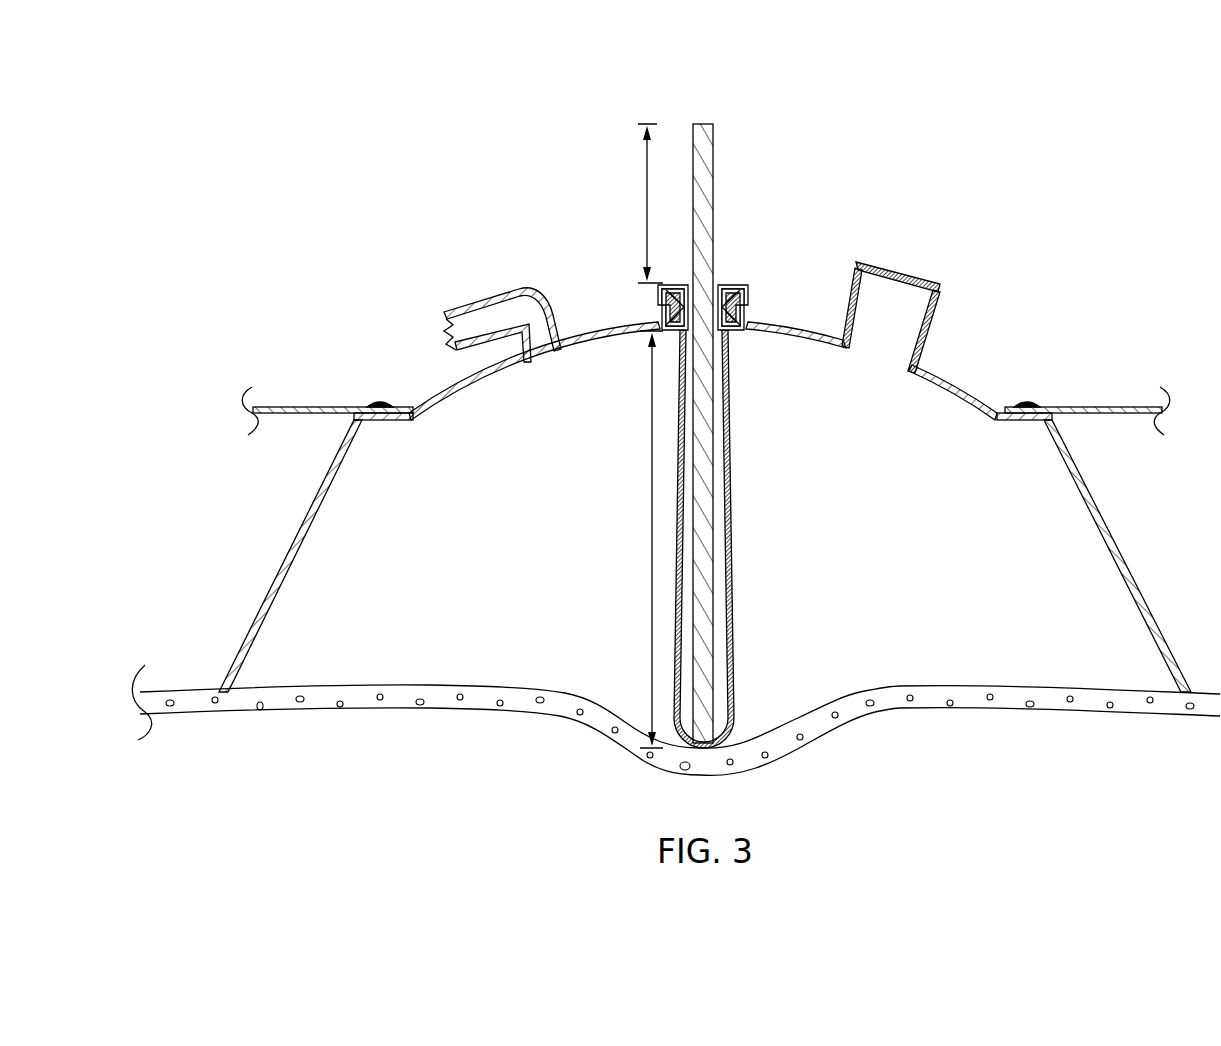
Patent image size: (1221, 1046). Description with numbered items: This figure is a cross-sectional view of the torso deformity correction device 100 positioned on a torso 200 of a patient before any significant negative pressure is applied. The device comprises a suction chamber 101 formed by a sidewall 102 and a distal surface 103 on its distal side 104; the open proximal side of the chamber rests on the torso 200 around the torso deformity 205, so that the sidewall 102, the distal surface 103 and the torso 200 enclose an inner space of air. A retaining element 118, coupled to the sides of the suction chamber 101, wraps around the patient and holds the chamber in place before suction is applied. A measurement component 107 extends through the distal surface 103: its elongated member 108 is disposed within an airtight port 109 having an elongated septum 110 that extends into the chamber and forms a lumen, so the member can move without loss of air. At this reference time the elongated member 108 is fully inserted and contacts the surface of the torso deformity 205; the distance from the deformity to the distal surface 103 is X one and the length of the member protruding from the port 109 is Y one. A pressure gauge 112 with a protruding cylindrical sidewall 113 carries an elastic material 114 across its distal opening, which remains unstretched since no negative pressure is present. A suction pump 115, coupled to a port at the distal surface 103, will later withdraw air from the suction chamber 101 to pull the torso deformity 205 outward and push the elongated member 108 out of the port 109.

The correction device 100 is at (1113, 99).
The suction chamber 101 is at (988, 367).
The sidewall 102 is at (1135, 572).
The distal surface 103 is at (598, 318).
The distal side 104 is at (470, 112).
The measurement component 107 is at (757, 174).
The elongated member 108 is at (715, 148).
The airtight port 109 is at (731, 300).
The elongated septum 110 is at (726, 383).
The pressure gauge 112 is at (858, 248).
The protruding cylindrical sidewall 113 is at (930, 322).
The elastic material 114 is at (897, 266).
The suction pump 115 is at (477, 300).
The retaining element 118 is at (290, 405).
The torso 200 is at (555, 706).
The torso deformity 205 is at (787, 768).